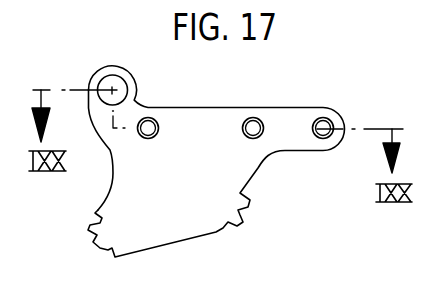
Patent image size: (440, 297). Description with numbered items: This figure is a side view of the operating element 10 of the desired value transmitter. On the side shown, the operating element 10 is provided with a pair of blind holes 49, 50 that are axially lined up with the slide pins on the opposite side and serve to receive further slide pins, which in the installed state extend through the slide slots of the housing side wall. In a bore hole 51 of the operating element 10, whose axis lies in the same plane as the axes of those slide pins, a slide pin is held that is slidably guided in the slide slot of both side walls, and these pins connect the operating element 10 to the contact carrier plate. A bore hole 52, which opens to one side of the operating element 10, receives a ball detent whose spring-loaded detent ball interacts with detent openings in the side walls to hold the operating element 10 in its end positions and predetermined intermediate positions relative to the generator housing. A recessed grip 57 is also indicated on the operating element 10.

The operating element 10 is at (203, 210).
The blind hole 49 is at (145, 132).
The blind hole 50 is at (253, 128).
The bore hole 51 is at (323, 128).
The bore hole 52 is at (108, 70).
The recessed grip 57 is at (115, 172).